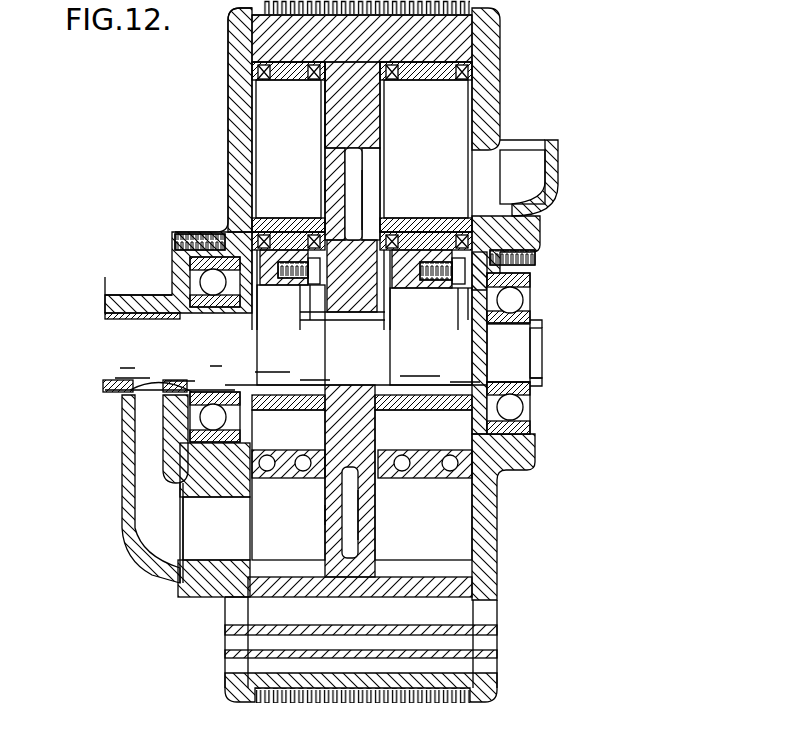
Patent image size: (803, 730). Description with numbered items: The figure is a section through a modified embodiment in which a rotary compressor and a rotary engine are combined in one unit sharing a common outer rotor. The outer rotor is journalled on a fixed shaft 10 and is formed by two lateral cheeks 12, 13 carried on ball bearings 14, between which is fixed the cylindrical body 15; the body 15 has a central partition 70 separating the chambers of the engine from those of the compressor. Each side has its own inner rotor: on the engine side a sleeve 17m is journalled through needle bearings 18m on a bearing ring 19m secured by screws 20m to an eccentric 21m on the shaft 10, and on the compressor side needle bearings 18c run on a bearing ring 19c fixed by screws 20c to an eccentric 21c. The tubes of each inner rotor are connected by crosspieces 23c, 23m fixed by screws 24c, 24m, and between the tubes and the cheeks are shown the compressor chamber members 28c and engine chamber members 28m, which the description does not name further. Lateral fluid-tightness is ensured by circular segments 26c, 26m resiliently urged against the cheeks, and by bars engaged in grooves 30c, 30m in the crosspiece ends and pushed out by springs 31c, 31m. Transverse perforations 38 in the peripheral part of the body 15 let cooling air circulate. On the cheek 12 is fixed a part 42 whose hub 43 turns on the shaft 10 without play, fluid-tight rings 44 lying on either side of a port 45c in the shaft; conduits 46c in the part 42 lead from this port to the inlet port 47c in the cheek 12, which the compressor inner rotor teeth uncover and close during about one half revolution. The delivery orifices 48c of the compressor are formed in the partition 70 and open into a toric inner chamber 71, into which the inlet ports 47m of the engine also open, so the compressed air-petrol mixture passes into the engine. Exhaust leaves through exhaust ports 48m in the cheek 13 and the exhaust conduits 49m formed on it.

The fixed shaft 10 is at (125, 353).
The lateral cheek 12 is at (236, 62).
The lateral cheek 13 is at (487, 85).
The ball bearings 14 is at (205, 263).
The cylindrical body 15 is at (333, 117).
The sleeve 17m is at (423, 243).
The needle bearings 18c is at (280, 263).
The needle bearings 18m is at (430, 275).
The bearing ring 19c is at (185, 258).
The bearing ring 19m is at (536, 258).
The screws 20c is at (297, 335).
The screws 20m is at (490, 329).
The eccentric 21c is at (279, 347).
The eccentric 21m is at (530, 322).
The crosspieces 23c is at (258, 482).
The crosspieces 23m is at (427, 470).
The screws 24c is at (303, 471).
The screws 24m is at (423, 478).
The circular segment 26c is at (243, 31).
The circular segment 26m is at (478, 62).
The cylinder 28c is at (353, 170).
The cylinder 28m is at (368, 163).
The grooves 30c is at (266, 80).
The grooves 30m is at (392, 82).
The springs 31c is at (313, 80).
The springs 31m is at (402, 82).
The transverse perforations 38 is at (237, 662).
The part 42 is at (262, 11).
The hub 43 is at (145, 300).
The fluid-tight rings 44 is at (150, 318).
The port 45c is at (148, 386).
The conduits 46c is at (152, 468).
The inlet port 47c is at (200, 521).
The inlet ports 47m is at (370, 198).
The delivery orifices 48c is at (337, 188).
The exhaust ports 48m is at (498, 187).
The exhaust conduits 49m is at (552, 152).
The central partition 70 is at (367, 147).
The toric inner chamber 71 is at (350, 162).